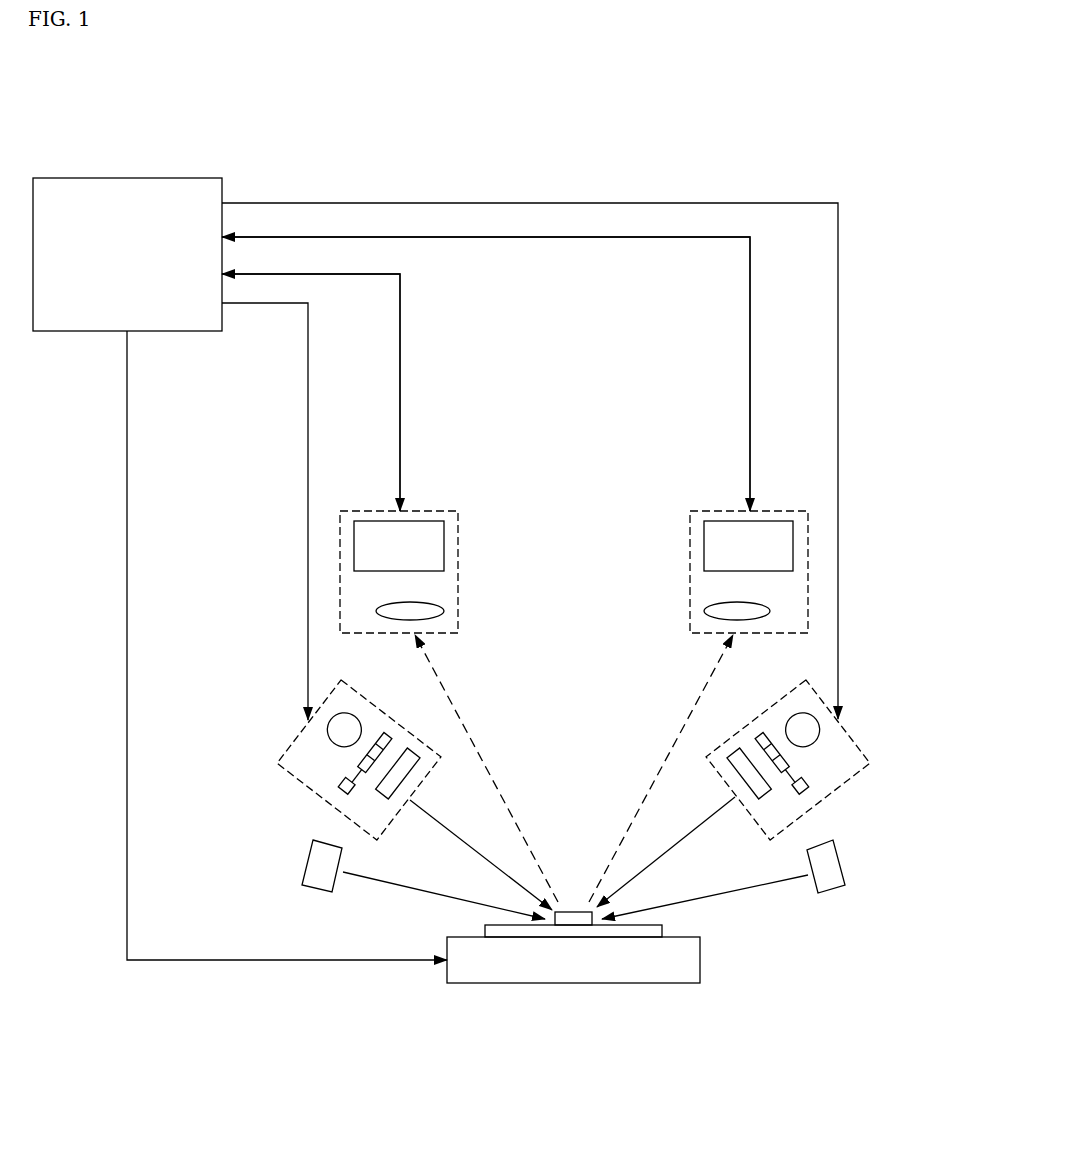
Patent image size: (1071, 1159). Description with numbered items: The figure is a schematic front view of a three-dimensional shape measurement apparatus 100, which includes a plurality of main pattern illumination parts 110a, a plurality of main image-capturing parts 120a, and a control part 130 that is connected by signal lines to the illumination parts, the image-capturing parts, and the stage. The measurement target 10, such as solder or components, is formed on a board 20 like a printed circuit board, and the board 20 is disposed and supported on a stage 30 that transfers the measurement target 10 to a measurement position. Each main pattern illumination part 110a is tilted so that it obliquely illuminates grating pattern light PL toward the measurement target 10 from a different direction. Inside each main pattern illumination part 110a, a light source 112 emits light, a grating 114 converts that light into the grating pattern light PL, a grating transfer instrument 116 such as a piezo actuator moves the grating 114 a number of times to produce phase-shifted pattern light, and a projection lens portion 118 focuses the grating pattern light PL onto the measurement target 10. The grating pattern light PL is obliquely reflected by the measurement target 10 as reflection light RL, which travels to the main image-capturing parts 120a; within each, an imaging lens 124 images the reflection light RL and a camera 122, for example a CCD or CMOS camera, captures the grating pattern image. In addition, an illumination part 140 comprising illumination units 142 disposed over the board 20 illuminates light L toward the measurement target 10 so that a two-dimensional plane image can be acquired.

The three-dimensional shape measurement apparatus 100 is at (708, 178).
The control part 130 is at (170, 178).
The main image-capturing part 120a is at (574, 548).
The camera 122 is at (723, 521).
The imaging lens 124 is at (712, 606).
The main pattern illumination part 110a is at (536, 759).
The light source 112 is at (345, 730).
The grating 114 is at (370, 759).
The grating transfer instrument 116 is at (346, 785).
The projection lens portion 118 is at (398, 773).
The illumination part 140 is at (554, 895).
The illumination unit 142 is at (316, 894).
The measurement target 10 is at (577, 912).
The board 20 is at (665, 931).
The stage 30 is at (577, 983).
The reflection light RL is at (653, 780).
The grating pattern light PL is at (693, 832).
The light L is at (782, 877).